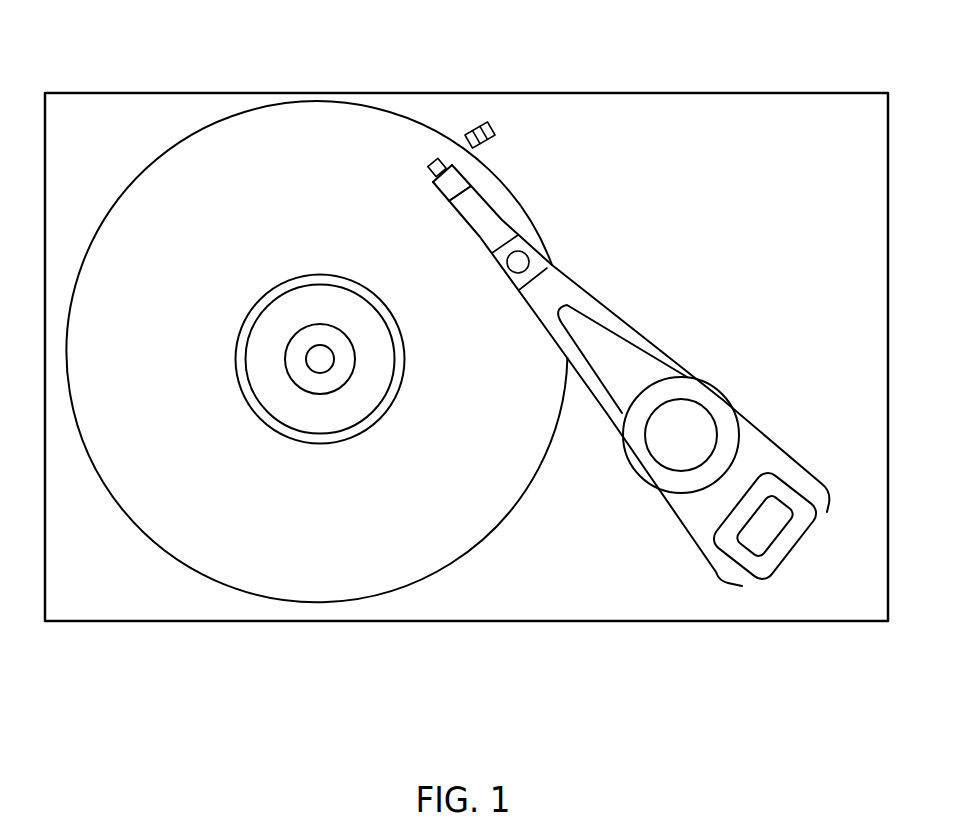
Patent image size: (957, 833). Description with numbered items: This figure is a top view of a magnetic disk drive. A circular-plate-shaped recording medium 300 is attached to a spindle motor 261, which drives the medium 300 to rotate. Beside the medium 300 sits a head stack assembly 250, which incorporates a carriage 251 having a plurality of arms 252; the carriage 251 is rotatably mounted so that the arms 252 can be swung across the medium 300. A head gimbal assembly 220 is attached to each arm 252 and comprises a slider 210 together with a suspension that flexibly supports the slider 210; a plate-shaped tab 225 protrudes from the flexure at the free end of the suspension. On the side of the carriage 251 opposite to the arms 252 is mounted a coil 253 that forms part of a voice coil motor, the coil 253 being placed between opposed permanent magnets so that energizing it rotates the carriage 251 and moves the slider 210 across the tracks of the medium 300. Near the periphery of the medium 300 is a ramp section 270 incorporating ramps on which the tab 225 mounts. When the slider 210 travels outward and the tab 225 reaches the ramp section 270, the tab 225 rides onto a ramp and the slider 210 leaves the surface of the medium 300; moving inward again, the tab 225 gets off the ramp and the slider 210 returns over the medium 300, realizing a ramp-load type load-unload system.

The recording medium 300 is at (227, 591).
The spindle motor 261 is at (320, 373).
The head gimbal assembly 220 is at (476, 239).
The tab 225 is at (431, 163).
The slider 210 is at (460, 172).
The ramp section 270 is at (473, 123).
The head stack assembly 250 is at (682, 533).
The carriage 251 is at (712, 390).
The arm 252 is at (607, 419).
The coil 253 is at (792, 552).